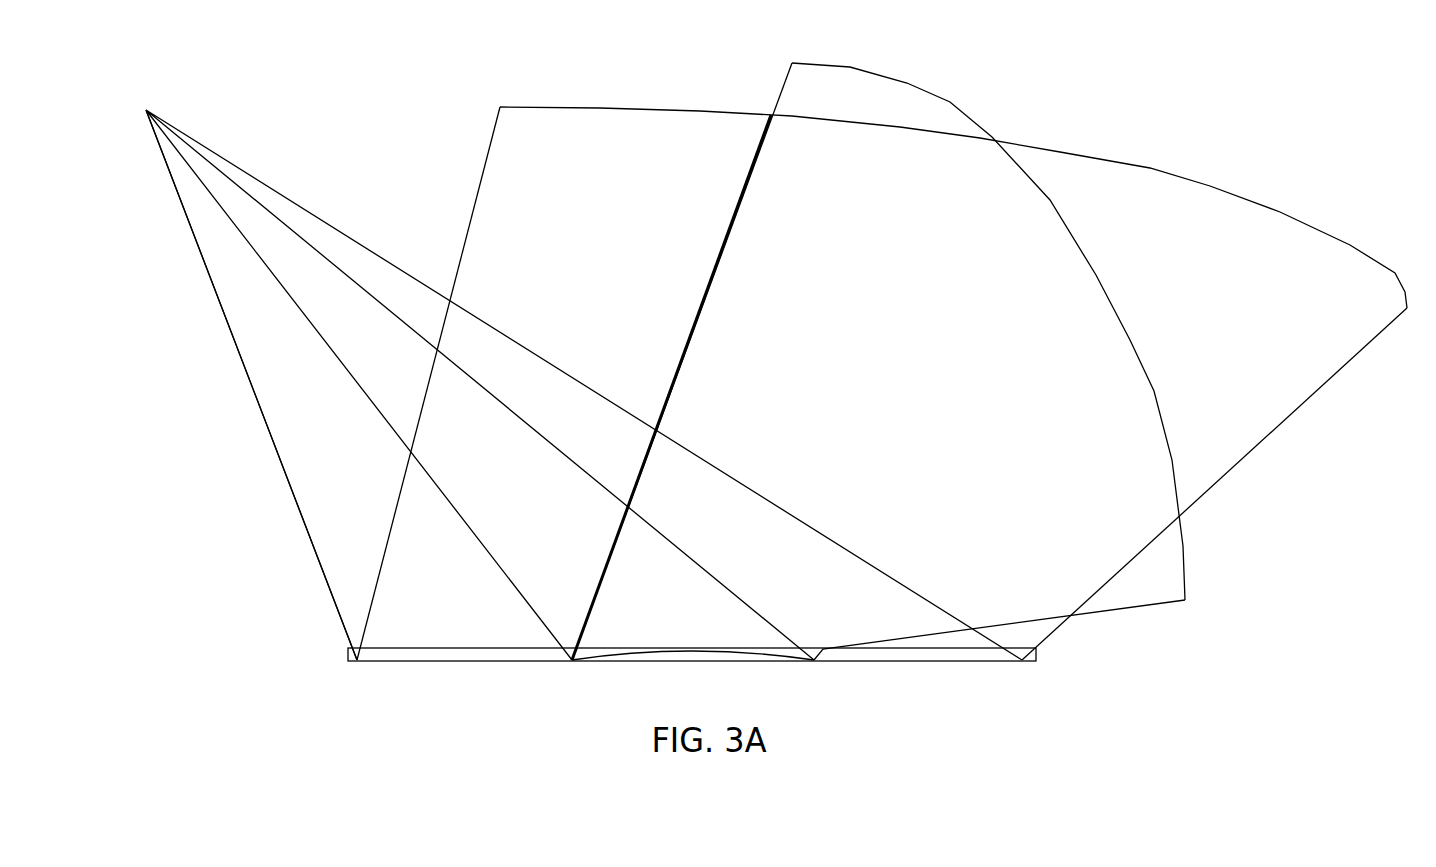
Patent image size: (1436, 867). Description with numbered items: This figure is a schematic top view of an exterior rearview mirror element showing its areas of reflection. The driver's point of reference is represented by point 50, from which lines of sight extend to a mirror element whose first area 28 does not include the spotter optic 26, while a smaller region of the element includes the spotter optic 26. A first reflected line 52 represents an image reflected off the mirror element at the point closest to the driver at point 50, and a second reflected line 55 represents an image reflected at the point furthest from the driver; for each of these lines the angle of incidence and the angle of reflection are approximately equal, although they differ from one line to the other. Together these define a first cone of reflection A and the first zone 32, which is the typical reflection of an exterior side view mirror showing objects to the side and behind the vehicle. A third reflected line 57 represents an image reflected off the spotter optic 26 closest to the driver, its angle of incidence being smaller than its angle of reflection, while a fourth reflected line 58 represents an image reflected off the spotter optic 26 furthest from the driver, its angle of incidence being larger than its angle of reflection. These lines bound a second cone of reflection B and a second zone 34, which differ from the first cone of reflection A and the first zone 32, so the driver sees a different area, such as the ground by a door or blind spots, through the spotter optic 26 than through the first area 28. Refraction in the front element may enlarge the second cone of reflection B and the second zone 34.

The point 50 is at (146, 108).
The first reflected line 52 is at (258, 403).
The first cone of reflection A is at (482, 181).
The second cone of reflection B is at (728, 235).
The first zone 32 is at (1210, 183).
The second zone 34 is at (907, 83).
The second reflected line 55 is at (1133, 552).
The third reflected line 57 is at (707, 298).
The fourth reflected line 58 is at (999, 622).
The first area 28 is at (430, 634).
The spotter optic 26 is at (638, 644).